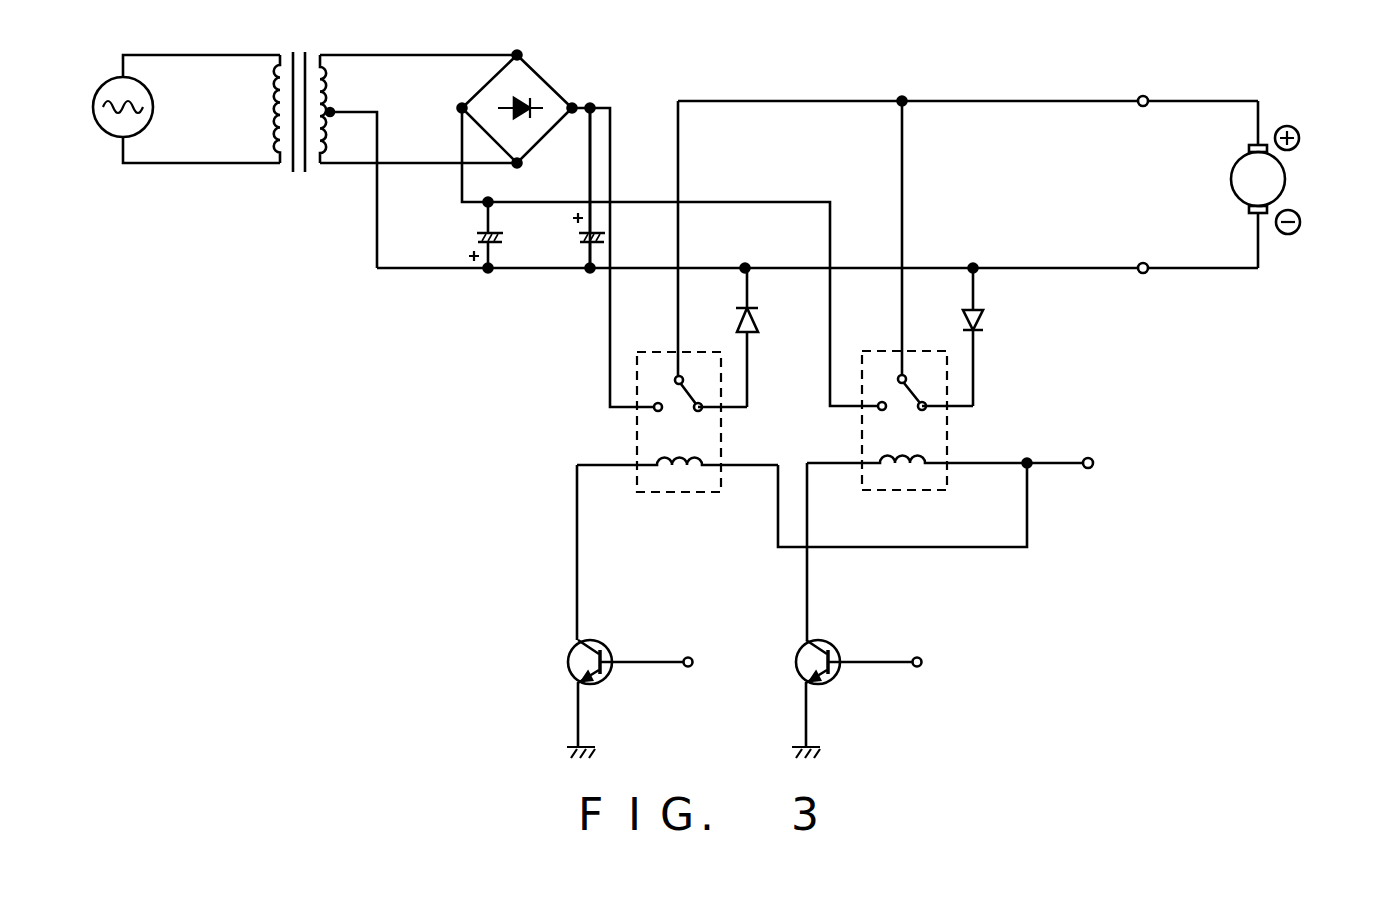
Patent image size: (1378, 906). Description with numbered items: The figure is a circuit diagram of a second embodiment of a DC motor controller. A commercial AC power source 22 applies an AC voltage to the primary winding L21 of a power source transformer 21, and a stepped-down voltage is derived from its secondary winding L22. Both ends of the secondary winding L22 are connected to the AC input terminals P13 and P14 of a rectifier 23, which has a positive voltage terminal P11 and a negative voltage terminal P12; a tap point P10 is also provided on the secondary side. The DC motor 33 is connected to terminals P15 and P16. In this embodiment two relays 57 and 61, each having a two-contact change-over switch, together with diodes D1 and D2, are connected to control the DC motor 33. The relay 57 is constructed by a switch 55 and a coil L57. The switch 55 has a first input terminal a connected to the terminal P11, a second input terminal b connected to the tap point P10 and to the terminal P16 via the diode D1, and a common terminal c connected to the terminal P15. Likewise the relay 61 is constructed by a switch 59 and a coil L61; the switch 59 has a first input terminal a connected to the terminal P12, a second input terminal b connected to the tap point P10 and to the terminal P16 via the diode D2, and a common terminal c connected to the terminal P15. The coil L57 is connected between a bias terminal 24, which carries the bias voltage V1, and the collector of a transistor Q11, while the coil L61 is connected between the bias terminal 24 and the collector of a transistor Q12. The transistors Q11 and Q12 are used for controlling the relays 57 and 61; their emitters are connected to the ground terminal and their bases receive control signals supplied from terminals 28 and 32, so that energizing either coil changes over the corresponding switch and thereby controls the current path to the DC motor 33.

The power source transformer 21 is at (296, 172).
The commercial AC power source 22 is at (110, 132).
The primary winding L21 is at (272, 94).
The secondary winding L22 is at (330, 57).
The tap point P10 is at (334, 111).
The positive voltage terminal P11 is at (576, 106).
The negative voltage terminal P12 is at (458, 112).
The AC input terminal P13 is at (520, 55).
The AC input terminal P14 is at (516, 167).
The rectifier 23 is at (540, 132).
The terminal P15 is at (1144, 96).
The terminal P16 is at (1144, 263).
The DC motor 33 is at (1287, 185).
The diode D1 is at (768, 337).
The diode D2 is at (994, 337).
The switch 55 is at (677, 377).
The relay 57 is at (669, 429).
The coil L57 is at (672, 467).
The switch 59 is at (900, 377).
The relay 61 is at (947, 428).
The coil L61 is at (897, 465).
The supply voltage terminal V1 is at (1106, 463).
The bias terminal 24 is at (1088, 468).
The terminal 28 is at (689, 657).
The terminal 32 is at (918, 657).
The transistor Q11 is at (569, 668).
The transistor Q12 is at (833, 675).